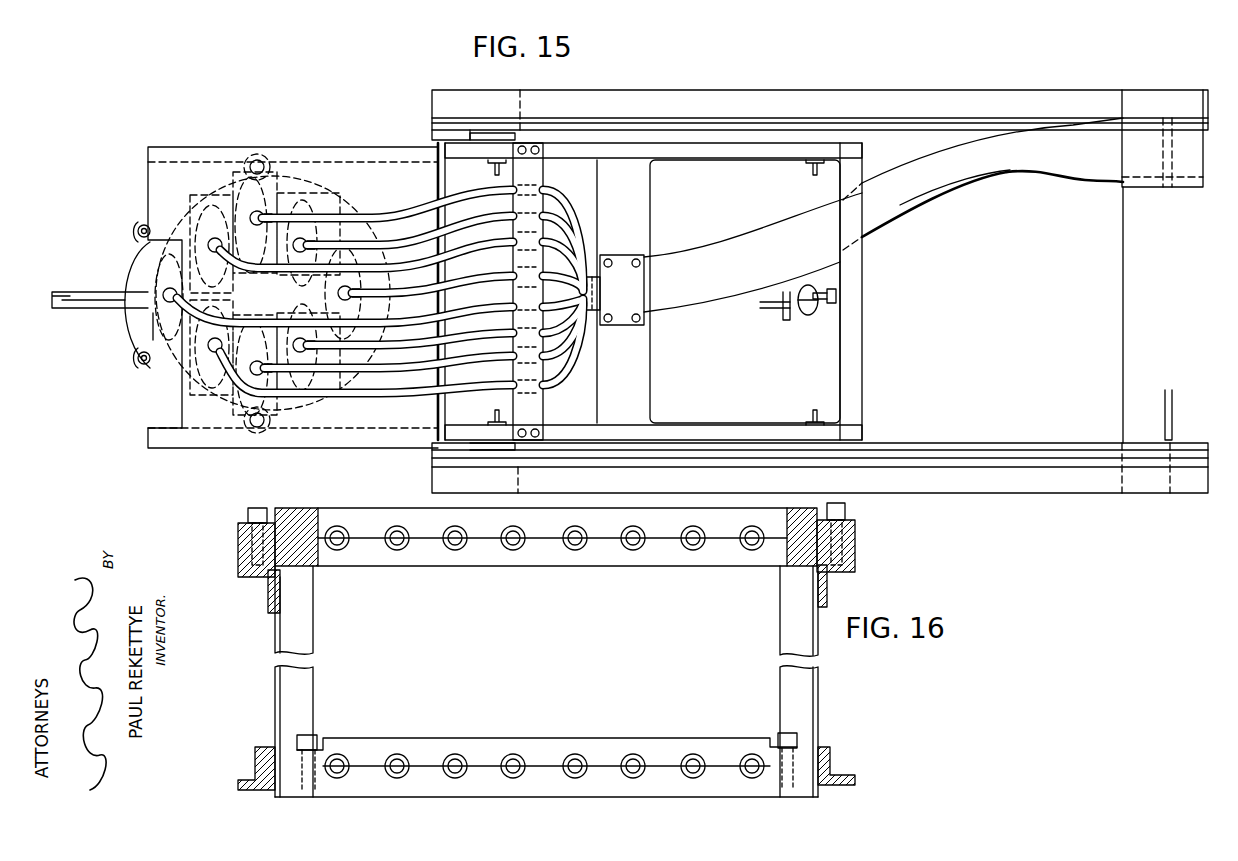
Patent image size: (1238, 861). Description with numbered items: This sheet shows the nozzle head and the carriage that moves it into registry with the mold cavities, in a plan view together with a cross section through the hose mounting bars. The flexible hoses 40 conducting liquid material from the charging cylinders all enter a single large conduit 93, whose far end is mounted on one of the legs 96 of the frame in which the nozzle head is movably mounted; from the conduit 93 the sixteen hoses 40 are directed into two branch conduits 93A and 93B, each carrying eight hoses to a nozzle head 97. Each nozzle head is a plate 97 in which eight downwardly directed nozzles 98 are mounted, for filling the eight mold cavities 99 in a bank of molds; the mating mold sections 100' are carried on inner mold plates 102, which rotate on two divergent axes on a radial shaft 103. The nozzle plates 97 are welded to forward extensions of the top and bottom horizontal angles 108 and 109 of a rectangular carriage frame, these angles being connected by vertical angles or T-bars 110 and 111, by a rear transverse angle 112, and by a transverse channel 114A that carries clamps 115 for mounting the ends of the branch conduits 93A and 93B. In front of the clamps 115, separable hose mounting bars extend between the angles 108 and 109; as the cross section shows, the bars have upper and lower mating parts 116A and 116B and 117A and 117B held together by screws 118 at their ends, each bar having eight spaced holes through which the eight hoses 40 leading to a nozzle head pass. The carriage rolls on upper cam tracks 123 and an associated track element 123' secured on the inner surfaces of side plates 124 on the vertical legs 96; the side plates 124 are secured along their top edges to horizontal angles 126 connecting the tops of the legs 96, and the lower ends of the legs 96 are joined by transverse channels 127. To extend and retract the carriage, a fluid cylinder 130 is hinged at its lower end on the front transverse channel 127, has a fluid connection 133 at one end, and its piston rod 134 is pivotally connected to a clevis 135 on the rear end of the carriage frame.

In FIG. 15, the flexible hoses 40 is at (398, 238).
In FIG. 16, the flexible hoses 40 is at (337, 550).
In FIG. 15, the conduit 93 is at (1108, 170).
In FIG. 15, the branch conduit 93A is at (880, 220).
In FIG. 15, the branch conduit 93B is at (965, 185).
In FIG. 15, the legs 96 is at (522, 108).
In FIG. 15, the nozzle head plate 97 is at (155, 187).
In FIG. 15, the nozzles 98 is at (268, 168).
In FIG. 15, the mold cavities 99 is at (248, 180).
In FIG. 15, the mold sections 100' is at (226, 295).
In FIG. 15, the mold plates 102 is at (138, 262).
In FIG. 15, the radial shaft 103 is at (85, 305).
In FIG. 15, the top angle 108 is at (660, 150).
In FIG. 16, the top angle 108 is at (268, 595).
In FIG. 16, the bottom angle 109 is at (255, 778).
In FIG. 15, the vertical angle or T-bar 110 is at (488, 168).
In FIG. 16, the vertical angle or T-bar 110 is at (275, 682).
In FIG. 15, the vertical angle or T-bar 111 is at (806, 170).
In FIG. 15, the transverse angle 112 is at (877, 291).
In FIG. 15, the transverse channel 114A is at (640, 348).
In FIG. 15, the clamps 115 is at (635, 276).
In FIG. 15, the upper mating part of hose mounting bar 116A is at (528, 385).
In FIG. 16, the upper mating part of hose mounting bar 116A is at (383, 522).
In FIG. 16, the lower mating part of hose mounting bar 116B is at (420, 560).
In FIG. 16, the upper mating part of hose mounting bar 117A is at (475, 752).
In FIG. 16, the lower mating part of hose mounting bar 117B is at (845, 787).
In FIG. 15, the screws 118 is at (538, 147).
In FIG. 16, the screws 118 is at (248, 515).
In FIG. 15, the upper cam tracks 123 is at (820, 256).
In FIG. 15, the rail bracket 123' is at (460, 270).
In FIG. 15, the side plates 124 is at (975, 120).
In FIG. 15, the horizontal angles 126 is at (776, 103).
In FIG. 15, the transverse channels 127 is at (440, 136).
In FIG. 15, the fluid cylinder 130 is at (770, 312).
In FIG. 15, the fluid connection 133 is at (795, 315).
In FIG. 15, the piston rod 134 is at (822, 305).
In FIG. 15, the clevis 135 is at (840, 296).